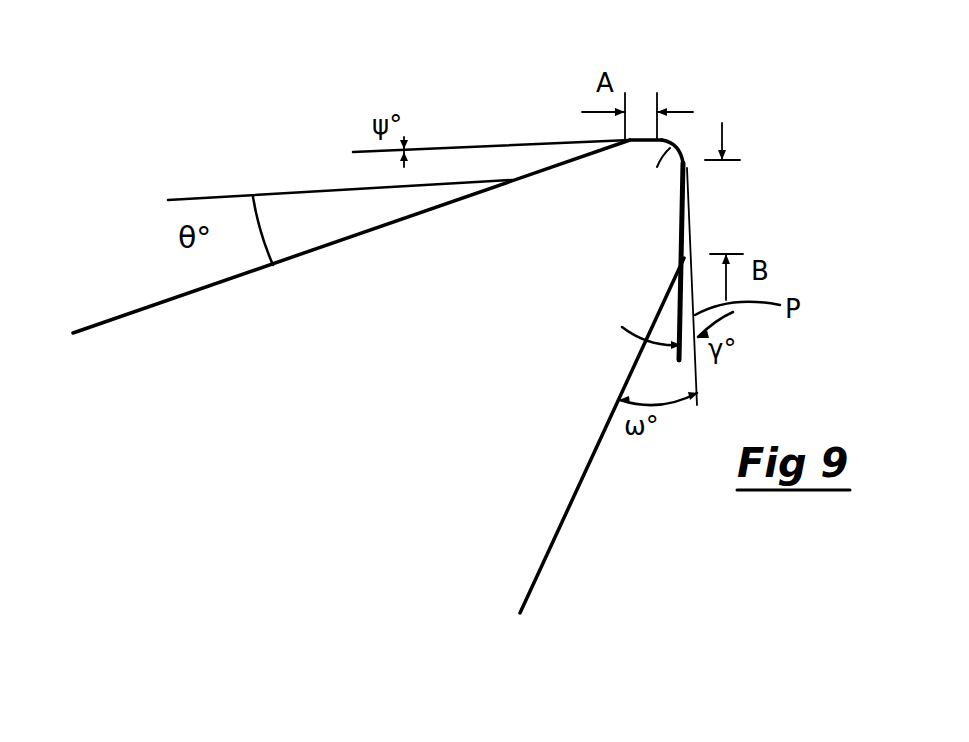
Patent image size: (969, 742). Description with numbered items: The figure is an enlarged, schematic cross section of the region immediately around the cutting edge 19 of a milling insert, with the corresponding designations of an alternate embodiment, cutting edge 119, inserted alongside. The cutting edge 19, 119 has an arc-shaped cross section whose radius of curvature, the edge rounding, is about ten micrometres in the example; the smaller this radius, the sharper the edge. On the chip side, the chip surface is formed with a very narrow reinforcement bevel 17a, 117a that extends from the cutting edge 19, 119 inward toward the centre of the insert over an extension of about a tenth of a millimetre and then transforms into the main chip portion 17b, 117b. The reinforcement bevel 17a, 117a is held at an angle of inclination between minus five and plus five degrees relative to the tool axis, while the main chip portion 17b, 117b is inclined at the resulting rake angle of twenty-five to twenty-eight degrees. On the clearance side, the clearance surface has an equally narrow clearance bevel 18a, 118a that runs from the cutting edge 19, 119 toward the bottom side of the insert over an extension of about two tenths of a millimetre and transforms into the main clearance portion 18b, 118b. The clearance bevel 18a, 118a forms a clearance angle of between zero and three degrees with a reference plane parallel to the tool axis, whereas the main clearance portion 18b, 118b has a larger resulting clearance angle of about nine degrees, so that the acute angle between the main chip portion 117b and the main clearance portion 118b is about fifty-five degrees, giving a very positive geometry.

The reinforcement bevel 17a is at (601, 193).
The reinforcement bevel 117a is at (645, 147).
The main chip portion 17b is at (351, 236).
The main chip portion 117b is at (472, 198).
The clearance bevel 18a is at (613, 284).
The clearance bevel 118a is at (680, 210).
The main clearance portion 18b is at (560, 435).
The main clearance portion 118b is at (578, 490).
The cutting edge 19 is at (760, 109).
The cutting edge 119 is at (718, 100).